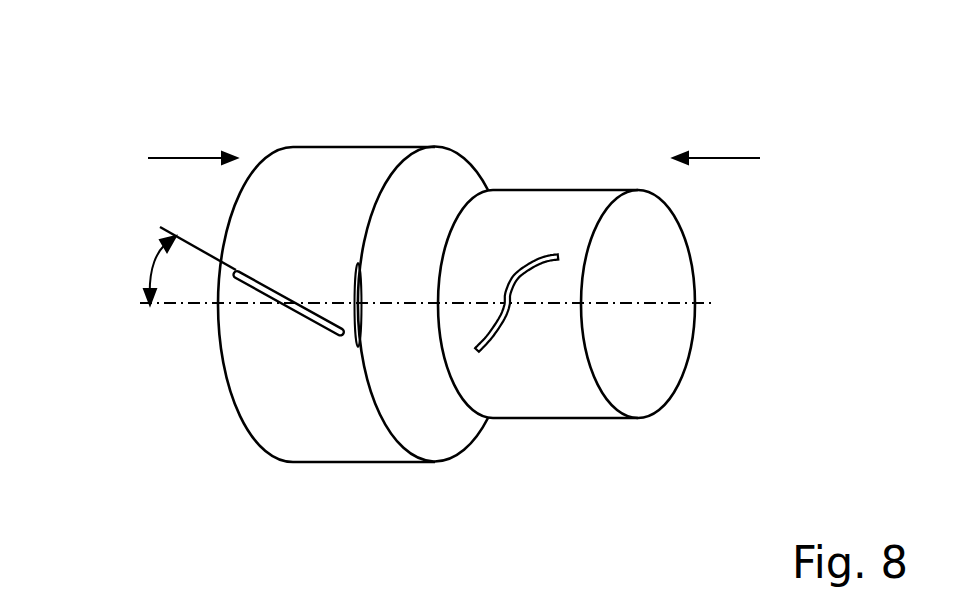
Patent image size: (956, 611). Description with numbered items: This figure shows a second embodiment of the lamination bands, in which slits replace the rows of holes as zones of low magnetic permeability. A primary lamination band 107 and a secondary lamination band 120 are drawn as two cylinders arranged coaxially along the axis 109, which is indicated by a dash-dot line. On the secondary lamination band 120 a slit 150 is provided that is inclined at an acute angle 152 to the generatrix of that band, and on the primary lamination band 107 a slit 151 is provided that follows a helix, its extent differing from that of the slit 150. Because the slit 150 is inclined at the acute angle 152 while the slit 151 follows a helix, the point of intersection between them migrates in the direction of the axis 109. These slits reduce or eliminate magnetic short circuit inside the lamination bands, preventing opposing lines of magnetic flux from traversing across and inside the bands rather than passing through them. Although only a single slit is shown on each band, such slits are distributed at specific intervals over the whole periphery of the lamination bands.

The primary lamination band 107 is at (648, 190).
The axis 109 is at (720, 303).
The secondary lamination band 120 is at (430, 147).
The slit 150 is at (262, 287).
The slit 151 is at (558, 257).
The acute angle 152 is at (151, 262).